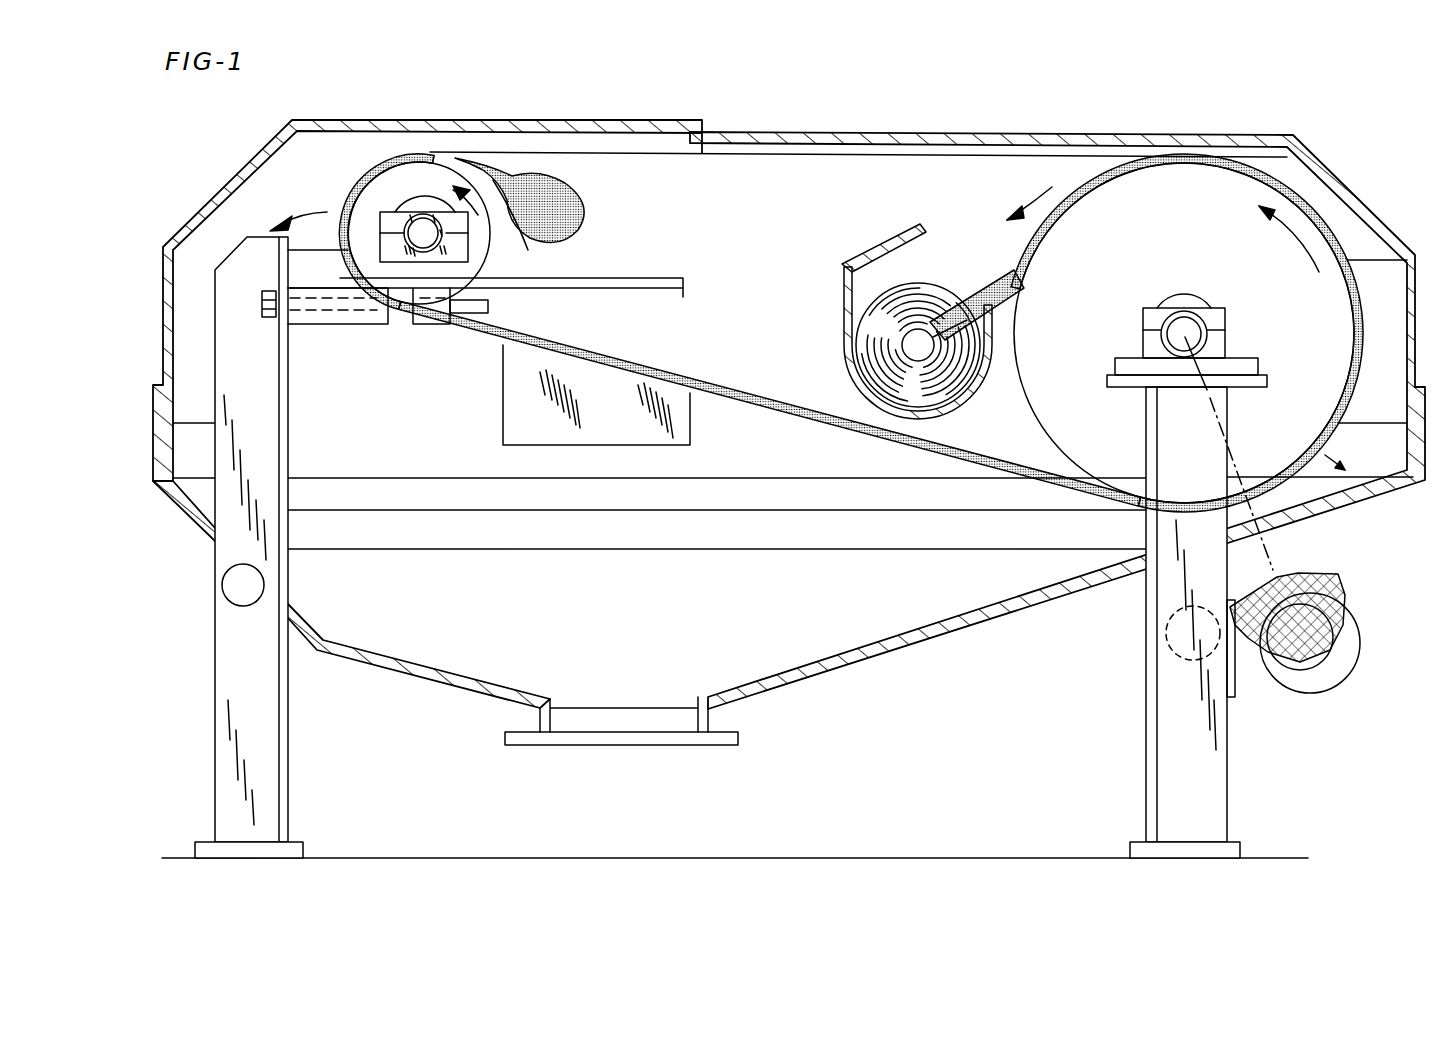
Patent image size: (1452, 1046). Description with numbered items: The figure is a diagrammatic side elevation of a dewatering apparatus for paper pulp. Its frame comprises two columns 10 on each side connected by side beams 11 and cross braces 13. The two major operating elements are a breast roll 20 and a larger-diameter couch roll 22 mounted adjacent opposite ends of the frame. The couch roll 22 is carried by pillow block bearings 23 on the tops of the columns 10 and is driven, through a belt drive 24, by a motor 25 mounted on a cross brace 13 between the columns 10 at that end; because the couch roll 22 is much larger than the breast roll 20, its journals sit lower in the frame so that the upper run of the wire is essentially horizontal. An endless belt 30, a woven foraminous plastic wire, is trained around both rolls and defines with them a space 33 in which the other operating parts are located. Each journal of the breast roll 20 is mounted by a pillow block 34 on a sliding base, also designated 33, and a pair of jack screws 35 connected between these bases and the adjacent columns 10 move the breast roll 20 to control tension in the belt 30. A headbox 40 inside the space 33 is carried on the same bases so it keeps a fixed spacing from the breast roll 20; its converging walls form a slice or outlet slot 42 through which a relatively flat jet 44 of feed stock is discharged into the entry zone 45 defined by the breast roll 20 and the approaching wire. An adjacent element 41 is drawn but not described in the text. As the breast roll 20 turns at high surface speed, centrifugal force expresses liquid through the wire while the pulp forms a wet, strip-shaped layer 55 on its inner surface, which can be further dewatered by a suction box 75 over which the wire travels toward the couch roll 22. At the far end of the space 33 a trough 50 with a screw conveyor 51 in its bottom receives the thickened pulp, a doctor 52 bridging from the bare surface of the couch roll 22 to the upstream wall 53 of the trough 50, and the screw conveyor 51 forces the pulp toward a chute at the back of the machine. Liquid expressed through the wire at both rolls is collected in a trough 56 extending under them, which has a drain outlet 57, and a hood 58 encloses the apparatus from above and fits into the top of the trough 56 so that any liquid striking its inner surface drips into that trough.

The columns 10 is at (228, 535).
The side beams 11 is at (728, 532).
The cross braces 13 is at (232, 597).
The breast roll 20 is at (387, 185).
The couch roll 22 is at (1290, 220).
The pillow block bearings 23 is at (1143, 327).
The belt drive 24 is at (1267, 547).
The motor 25 is at (1323, 670).
The endless belt 30 is at (953, 157).
The space 33 is at (643, 307).
The pillow block 34 is at (397, 203).
The jack screws 35 is at (263, 302).
The headbox 40 is at (580, 207).
The scraper guide 41 is at (517, 243).
The outlet slot 42 is at (470, 167).
The jet of feed stock 44 is at (453, 160).
The entry zone 45 is at (433, 158).
The trough 50 is at (845, 298).
The screw conveyor 51 is at (877, 358).
The doctor 52 is at (1020, 302).
The upstream wall 53 is at (893, 240).
The layer 55 is at (1083, 177).
The trough 56 is at (902, 646).
The drain outlet 57 is at (653, 724).
The hood 58 is at (733, 133).
The suction box 75 is at (522, 420).